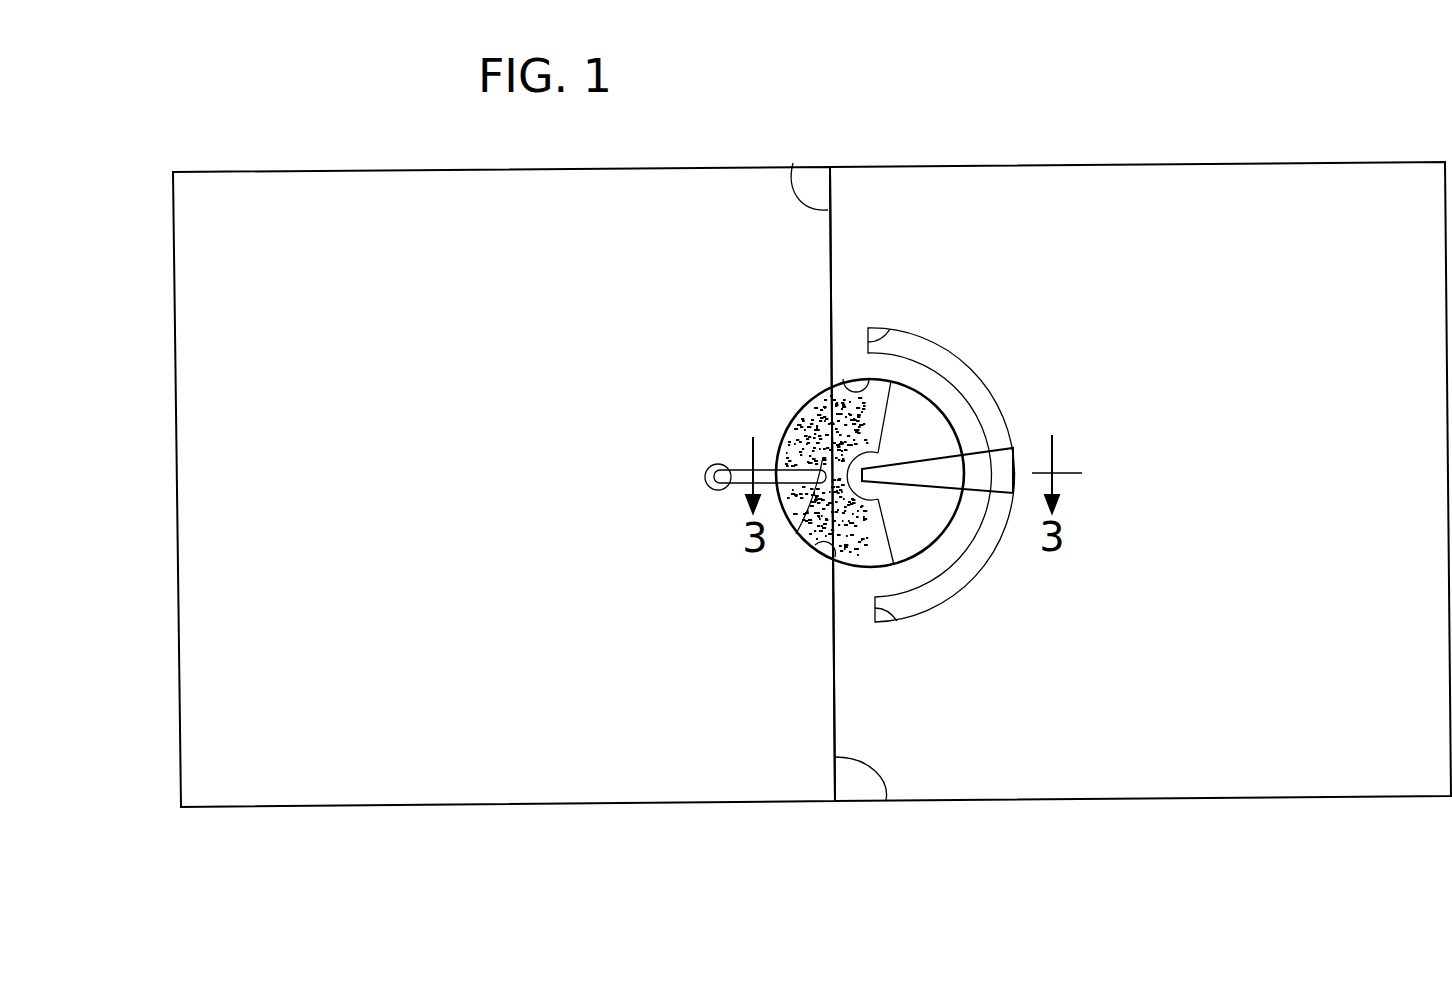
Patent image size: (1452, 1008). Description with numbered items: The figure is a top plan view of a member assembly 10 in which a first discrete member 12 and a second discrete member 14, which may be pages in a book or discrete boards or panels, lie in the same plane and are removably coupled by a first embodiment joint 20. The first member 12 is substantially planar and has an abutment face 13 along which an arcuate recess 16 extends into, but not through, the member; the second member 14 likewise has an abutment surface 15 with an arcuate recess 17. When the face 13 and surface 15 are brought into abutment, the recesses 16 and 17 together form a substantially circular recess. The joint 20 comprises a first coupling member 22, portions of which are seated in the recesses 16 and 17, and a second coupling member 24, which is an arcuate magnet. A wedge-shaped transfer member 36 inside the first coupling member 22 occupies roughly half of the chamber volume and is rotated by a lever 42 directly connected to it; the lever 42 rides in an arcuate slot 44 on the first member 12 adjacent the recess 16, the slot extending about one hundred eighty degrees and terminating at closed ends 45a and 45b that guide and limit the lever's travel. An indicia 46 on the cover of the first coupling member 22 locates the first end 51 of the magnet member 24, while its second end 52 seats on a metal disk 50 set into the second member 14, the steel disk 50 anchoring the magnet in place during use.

The member assembly 10 is at (812, 500).
The first discrete member 12 is at (1155, 175).
The abutment face 13 is at (793, 163).
The second discrete member 14 is at (333, 192).
The abutment surface 15 is at (886, 800).
The arcuate recess 16 is at (870, 378).
The arcuate recess 17 is at (828, 560).
The first embodiment joint 20 is at (836, 454).
The first coupling member 22 is at (961, 549).
The second coupling member 24 is at (684, 457).
The transfer member 36 is at (907, 520).
The lever 42 is at (1013, 447).
The arcuate slot 44 is at (966, 478).
The closed end 45a is at (893, 330).
The closed end 45b is at (907, 620).
The indicia 46 is at (788, 433).
The metal disk 50 is at (715, 490).
The first end 51 is at (796, 534).
The second end 52 is at (710, 470).